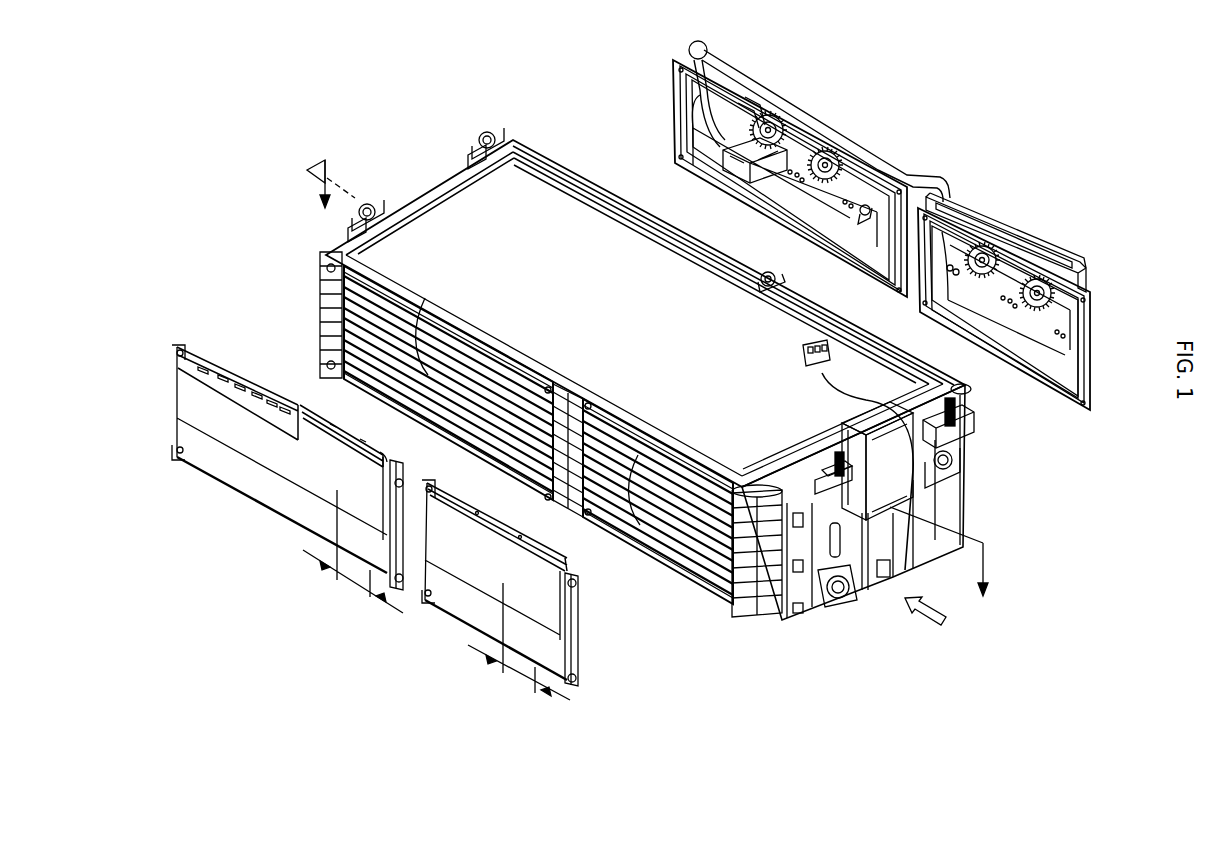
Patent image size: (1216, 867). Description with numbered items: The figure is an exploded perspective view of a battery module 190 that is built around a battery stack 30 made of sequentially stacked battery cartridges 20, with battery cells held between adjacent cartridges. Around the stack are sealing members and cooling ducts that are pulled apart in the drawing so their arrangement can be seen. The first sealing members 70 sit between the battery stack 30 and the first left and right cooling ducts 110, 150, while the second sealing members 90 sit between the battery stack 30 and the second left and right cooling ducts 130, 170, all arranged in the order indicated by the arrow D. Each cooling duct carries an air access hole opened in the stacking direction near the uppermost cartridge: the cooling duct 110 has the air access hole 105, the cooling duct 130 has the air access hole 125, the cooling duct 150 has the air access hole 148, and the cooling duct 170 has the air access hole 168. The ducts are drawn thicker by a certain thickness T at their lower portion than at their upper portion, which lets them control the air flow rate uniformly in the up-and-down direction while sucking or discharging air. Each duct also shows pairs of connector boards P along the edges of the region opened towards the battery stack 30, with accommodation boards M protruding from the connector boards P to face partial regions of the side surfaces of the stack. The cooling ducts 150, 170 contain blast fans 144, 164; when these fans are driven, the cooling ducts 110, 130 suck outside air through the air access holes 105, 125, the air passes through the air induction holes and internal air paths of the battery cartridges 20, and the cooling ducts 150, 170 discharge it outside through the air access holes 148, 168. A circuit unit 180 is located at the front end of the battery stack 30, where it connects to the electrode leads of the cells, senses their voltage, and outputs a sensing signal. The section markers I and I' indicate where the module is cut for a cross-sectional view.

The battery module 190 is at (290, 104).
The battery cartridge 20 is at (757, 614).
The battery stack 30 is at (970, 489).
The first sealing member 70 is at (708, 583).
The second sealing member 90 is at (392, 408).
The circuit unit 180 is at (918, 548).
The air access hole 168 is at (771, 62).
The second right cooling duct 170 is at (903, 173).
The blast fan 164 is at (823, 182).
The blast fan 144 is at (983, 272).
The air access hole 148 is at (1079, 260).
The first right cooling duct 150 is at (1094, 292).
The second left cooling duct 130 is at (243, 483).
The air access hole 125 is at (307, 402).
The first left cooling duct 110 is at (457, 607).
The air access hole 105 is at (569, 556).
The accommodation board M is at (674, 86).
The connector board P is at (674, 120).
The thickness T is at (436, 599).
The arrow (arrangement direction) D is at (928, 606).
The section line I is at (331, 202).
The section line I' is at (945, 566).